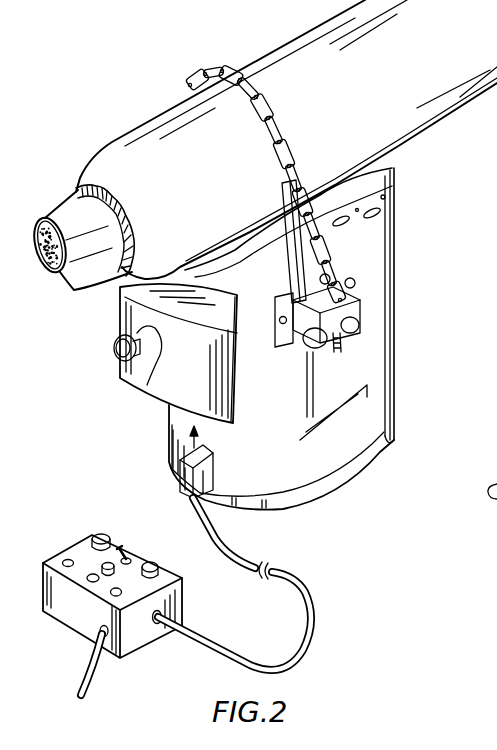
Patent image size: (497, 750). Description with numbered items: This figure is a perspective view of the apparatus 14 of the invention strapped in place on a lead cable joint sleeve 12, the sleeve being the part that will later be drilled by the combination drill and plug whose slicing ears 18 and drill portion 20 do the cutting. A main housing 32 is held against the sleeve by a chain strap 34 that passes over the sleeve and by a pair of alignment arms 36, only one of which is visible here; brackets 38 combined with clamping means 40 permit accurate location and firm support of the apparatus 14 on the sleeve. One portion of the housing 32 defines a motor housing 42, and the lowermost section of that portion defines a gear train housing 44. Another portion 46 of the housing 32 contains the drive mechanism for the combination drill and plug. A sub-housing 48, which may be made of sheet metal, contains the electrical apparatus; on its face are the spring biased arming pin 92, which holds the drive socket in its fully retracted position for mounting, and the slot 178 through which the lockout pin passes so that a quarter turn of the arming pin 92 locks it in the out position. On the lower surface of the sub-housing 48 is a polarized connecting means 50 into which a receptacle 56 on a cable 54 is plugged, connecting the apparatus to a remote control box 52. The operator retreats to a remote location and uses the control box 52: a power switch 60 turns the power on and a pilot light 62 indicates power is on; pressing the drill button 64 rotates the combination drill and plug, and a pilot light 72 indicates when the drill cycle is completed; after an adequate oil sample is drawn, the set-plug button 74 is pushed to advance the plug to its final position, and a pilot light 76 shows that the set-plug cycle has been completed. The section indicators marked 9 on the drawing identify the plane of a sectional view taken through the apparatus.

The cable joint sleeve 12 is at (134, 128).
The chain strap 34 is at (218, 72).
The main housing 32 is at (317, 457).
The alignment arms 36 is at (290, 267).
The brackets 38 is at (291, 335).
The clamping means 40 is at (357, 307).
The motor housing 42 is at (386, 300).
The gear train housing 44 is at (392, 440).
The apparatus 14 is at (462, 368).
The sub-housing 48 is at (120, 322).
The arming pin 92 is at (147, 378).
The slot 178 is at (170, 355).
The housing portion 46 is at (167, 432).
The polarized connecting means 50 is at (214, 428).
The receptacle 56 is at (208, 478).
The control box 52 is at (138, 634).
The cable 54 is at (313, 607).
The power switch 60 is at (121, 555).
The pilot light 62 is at (90, 583).
The drill button 64 is at (153, 563).
The pilot light 72 is at (122, 592).
The set-plug button 74 is at (101, 532).
The pilot light 76 is at (67, 559).
The section line 9- 9 is at (110, 360).
The slicing ears 18 is at (487, 214).
The drill portion 20 is at (490, 152).